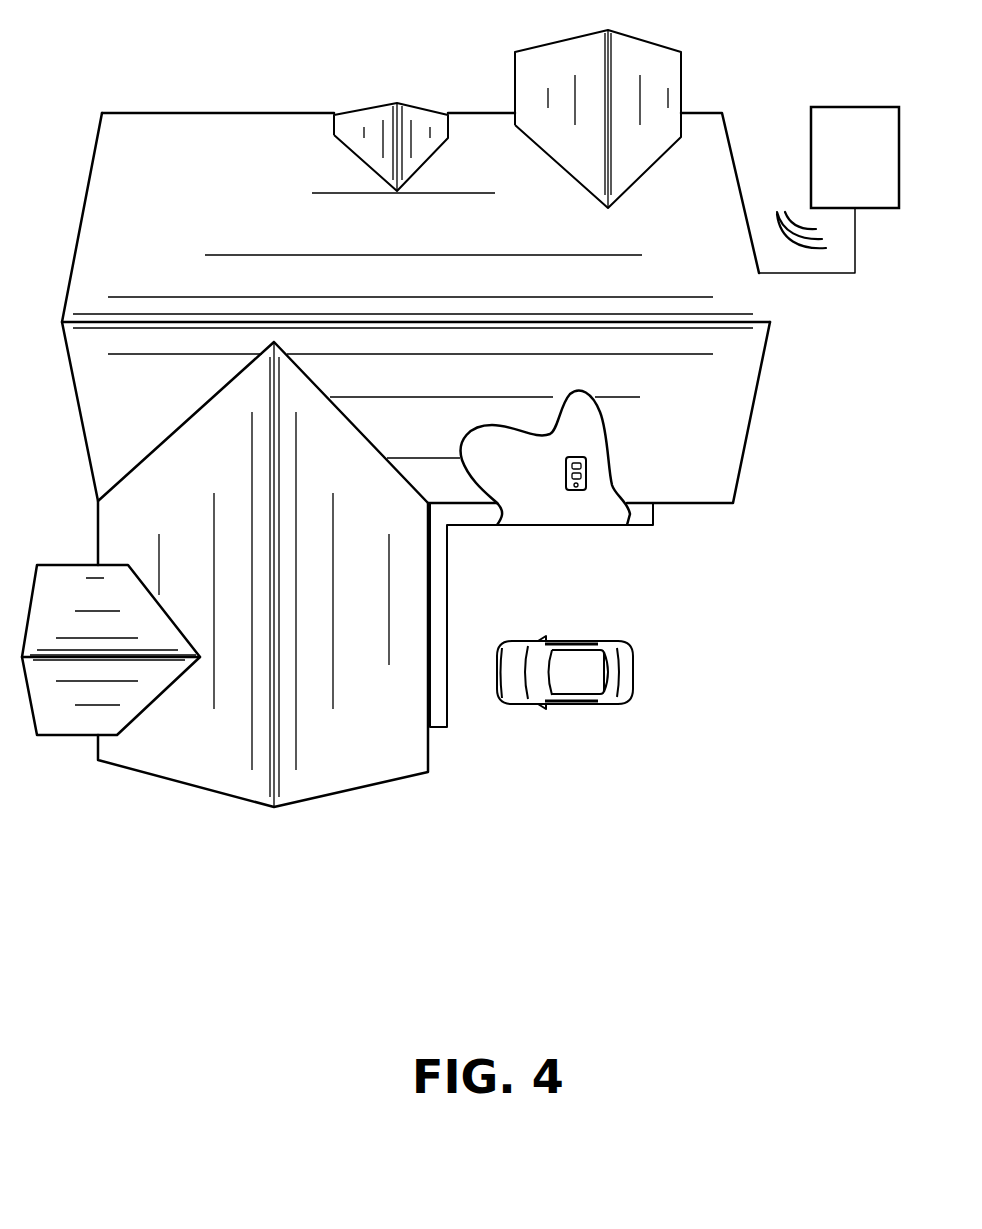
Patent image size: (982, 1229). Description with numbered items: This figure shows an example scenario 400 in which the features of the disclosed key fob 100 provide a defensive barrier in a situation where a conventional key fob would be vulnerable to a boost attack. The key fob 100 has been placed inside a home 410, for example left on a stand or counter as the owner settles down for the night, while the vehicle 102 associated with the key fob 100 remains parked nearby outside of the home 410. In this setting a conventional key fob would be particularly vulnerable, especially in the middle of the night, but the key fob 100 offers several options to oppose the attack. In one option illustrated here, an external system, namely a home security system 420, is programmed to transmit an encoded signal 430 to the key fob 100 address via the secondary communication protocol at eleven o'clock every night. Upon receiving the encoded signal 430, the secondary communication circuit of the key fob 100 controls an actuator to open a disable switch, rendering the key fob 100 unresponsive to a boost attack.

The example scenario 400 is at (495, 930).
The home 410 is at (128, 113).
The home security system 420 is at (877, 170).
The encoded signal 430 is at (787, 213).
The key fob 100 is at (578, 492).
The vehicle 102 is at (583, 705).